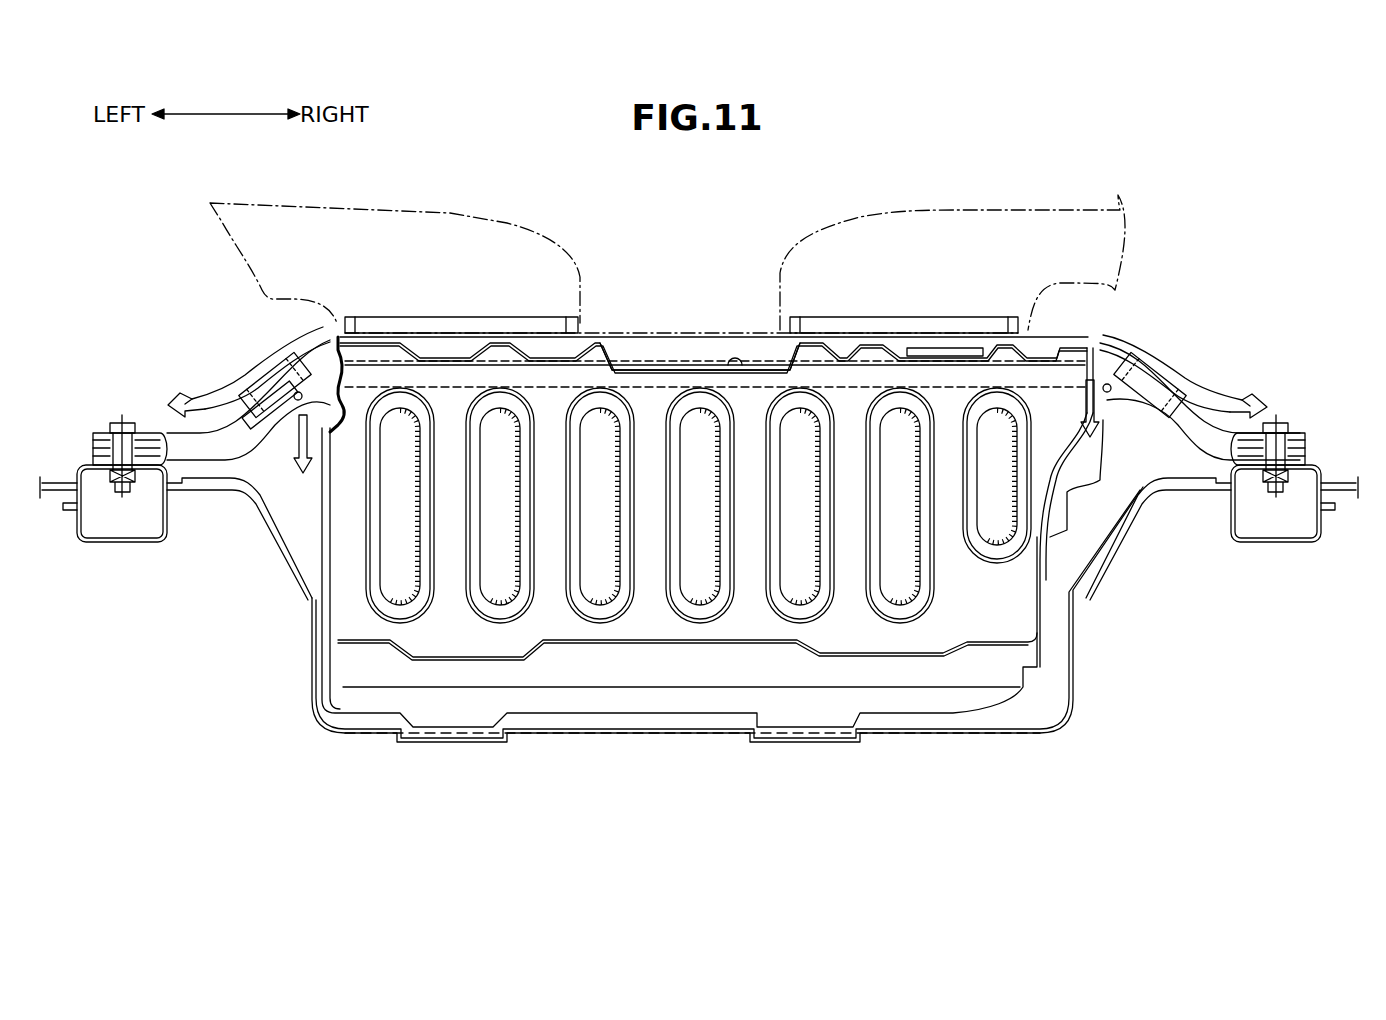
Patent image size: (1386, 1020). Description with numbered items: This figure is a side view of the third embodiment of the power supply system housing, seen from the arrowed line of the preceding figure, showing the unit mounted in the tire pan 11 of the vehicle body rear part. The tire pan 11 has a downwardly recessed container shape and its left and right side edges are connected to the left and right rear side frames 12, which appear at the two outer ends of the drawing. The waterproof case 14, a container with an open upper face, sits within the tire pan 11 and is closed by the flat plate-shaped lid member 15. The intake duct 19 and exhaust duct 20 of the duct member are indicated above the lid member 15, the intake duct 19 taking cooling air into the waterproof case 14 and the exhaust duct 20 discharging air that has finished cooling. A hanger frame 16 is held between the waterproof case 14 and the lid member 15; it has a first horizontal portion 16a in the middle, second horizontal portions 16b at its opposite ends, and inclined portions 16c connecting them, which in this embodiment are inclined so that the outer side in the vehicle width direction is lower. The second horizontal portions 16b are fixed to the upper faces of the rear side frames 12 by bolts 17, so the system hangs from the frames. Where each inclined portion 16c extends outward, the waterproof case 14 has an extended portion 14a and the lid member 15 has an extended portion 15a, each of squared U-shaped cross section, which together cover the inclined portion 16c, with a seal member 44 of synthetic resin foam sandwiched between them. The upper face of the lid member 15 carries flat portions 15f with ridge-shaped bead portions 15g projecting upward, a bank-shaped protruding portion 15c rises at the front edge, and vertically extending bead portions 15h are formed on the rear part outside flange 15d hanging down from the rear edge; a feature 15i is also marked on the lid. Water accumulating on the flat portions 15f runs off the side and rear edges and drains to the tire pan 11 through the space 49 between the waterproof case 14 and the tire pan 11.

The tire pan 11 is at (592, 742).
The rear side frame 12 is at (112, 542).
The waterproof case 14 is at (1040, 650).
The extended portion 14a is at (292, 432).
The lid member 15 is at (716, 337).
The extended portion 15a is at (270, 366).
The protruding portion 15c is at (655, 340).
The rear part outside flange 15d is at (656, 645).
The flat portion 15f is at (445, 358).
The bead portion 15g is at (380, 343).
The bead portion 15h is at (600, 605).
The projection 15i is at (1108, 337).
The hanger frame 16 is at (204, 455).
The first horizontal portion 16a is at (736, 362).
The second horizontal portion 16b is at (152, 433).
The inclined portion 16c is at (282, 358).
The bolt 17 is at (118, 423).
The intake duct 19 is at (450, 213).
The exhaust duct 20 is at (990, 210).
The seal member 44 is at (268, 420).
The space 49 is at (314, 610).